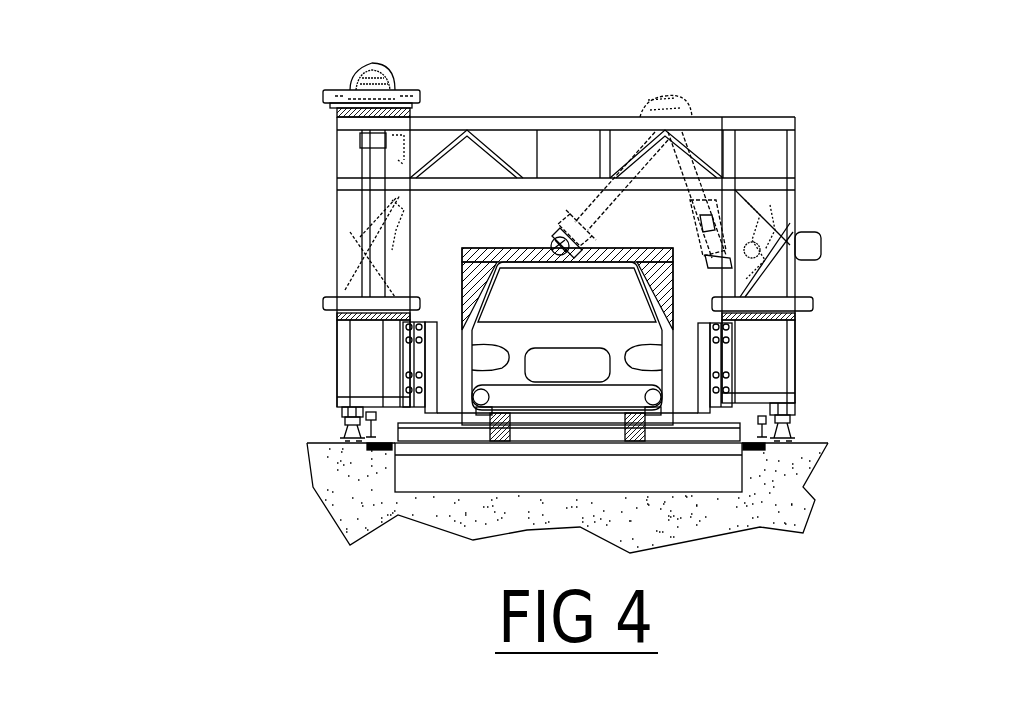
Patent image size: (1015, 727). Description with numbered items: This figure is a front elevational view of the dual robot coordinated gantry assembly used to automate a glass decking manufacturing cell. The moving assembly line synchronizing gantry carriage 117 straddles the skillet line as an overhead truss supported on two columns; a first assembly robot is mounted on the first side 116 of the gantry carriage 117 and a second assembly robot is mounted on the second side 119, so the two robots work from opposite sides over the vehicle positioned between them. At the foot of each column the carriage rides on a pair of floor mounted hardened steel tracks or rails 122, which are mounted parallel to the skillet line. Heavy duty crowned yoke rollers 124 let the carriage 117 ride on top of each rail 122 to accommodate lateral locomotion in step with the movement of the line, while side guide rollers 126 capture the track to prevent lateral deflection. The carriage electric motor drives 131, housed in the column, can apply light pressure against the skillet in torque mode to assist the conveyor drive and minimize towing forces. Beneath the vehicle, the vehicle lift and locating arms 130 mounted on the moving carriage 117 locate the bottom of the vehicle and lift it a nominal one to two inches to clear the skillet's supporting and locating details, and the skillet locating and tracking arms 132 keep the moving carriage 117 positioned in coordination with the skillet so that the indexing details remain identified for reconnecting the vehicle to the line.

The first side 116 is at (275, 283).
The gantry carriage 117 is at (738, 113).
The second side 119 is at (835, 277).
The carriage electric motor drives 131 is at (373, 330).
The crowned yoke rollers 124 is at (347, 393).
The rails 122 is at (340, 417).
The side guide rollers 126 is at (355, 430).
The vehicle lift and locating arms 130 is at (480, 414).
The skillet locating and tracking arms 132 is at (504, 425).